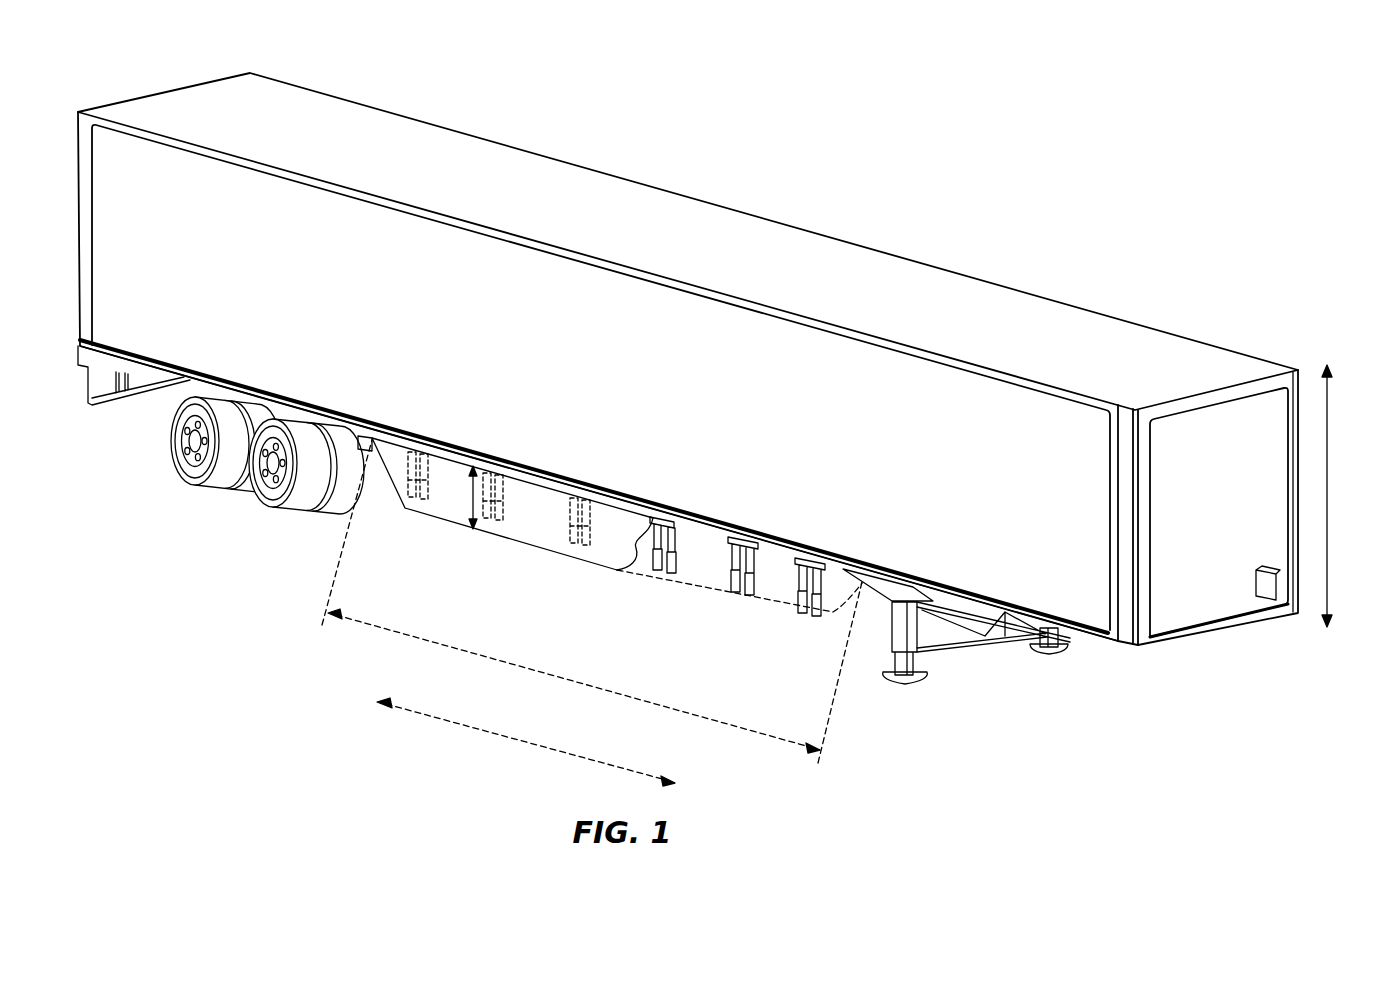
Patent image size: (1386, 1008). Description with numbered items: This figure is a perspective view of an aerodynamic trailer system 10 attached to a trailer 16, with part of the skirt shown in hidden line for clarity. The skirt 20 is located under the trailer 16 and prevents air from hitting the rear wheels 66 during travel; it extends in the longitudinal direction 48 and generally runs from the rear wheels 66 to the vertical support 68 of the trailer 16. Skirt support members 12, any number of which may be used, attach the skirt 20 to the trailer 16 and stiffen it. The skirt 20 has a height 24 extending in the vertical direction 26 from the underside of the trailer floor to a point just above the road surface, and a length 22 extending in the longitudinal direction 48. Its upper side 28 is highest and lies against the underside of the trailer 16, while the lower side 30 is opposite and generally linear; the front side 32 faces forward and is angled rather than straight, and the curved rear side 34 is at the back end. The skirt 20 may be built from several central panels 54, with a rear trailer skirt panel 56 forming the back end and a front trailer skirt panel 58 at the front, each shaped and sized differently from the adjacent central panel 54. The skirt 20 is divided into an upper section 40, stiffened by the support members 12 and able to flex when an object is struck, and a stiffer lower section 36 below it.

The aerodynamic trailer system 10 is at (1050, 124).
The skirt support member 12 is at (652, 560).
The trailer 16 is at (641, 250).
The skirt 20 is at (499, 488).
The length 22 is at (575, 683).
The height 24 is at (472, 500).
The vertical direction 26 is at (1341, 496).
The upper side 28 is at (447, 436).
The lower side 30 is at (415, 528).
The front side 32 is at (862, 583).
The rear side 34 is at (390, 483).
The lower section 36 is at (567, 550).
The upper section 40 is at (603, 510).
The longitudinal direction 48 is at (527, 742).
The central panel 54 is at (553, 503).
The rear trailer skirt panel 56 is at (385, 443).
The front trailer skirt panel 58 is at (862, 584).
The rear wheels 66 is at (248, 495).
The vertical support 68 is at (912, 665).